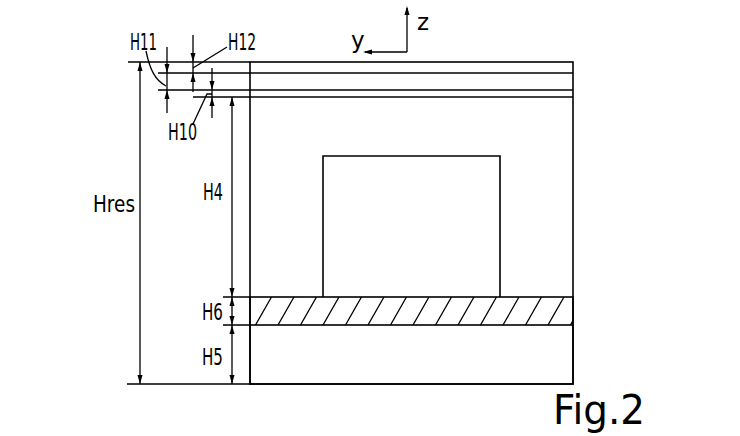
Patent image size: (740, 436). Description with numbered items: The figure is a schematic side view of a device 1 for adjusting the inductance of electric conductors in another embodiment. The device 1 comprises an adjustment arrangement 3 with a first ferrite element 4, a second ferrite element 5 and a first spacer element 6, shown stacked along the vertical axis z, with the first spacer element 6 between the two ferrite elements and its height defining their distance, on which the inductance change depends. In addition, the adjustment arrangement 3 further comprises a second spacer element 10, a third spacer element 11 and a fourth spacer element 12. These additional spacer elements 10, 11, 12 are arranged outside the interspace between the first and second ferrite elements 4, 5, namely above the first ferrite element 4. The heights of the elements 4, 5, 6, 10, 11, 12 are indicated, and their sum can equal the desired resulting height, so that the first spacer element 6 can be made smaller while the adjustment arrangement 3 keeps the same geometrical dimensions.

The device 1 is at (108, 334).
The adjustment arrangement 3 is at (466, 208).
The first ferrite element 4 is at (573, 263).
The second ferrite element 5 is at (573, 360).
The first spacer element 6 is at (573, 310).
The second spacer element 10 is at (442, 116).
The third spacer element 11 is at (573, 82).
The fourth spacer element 12 is at (573, 62).